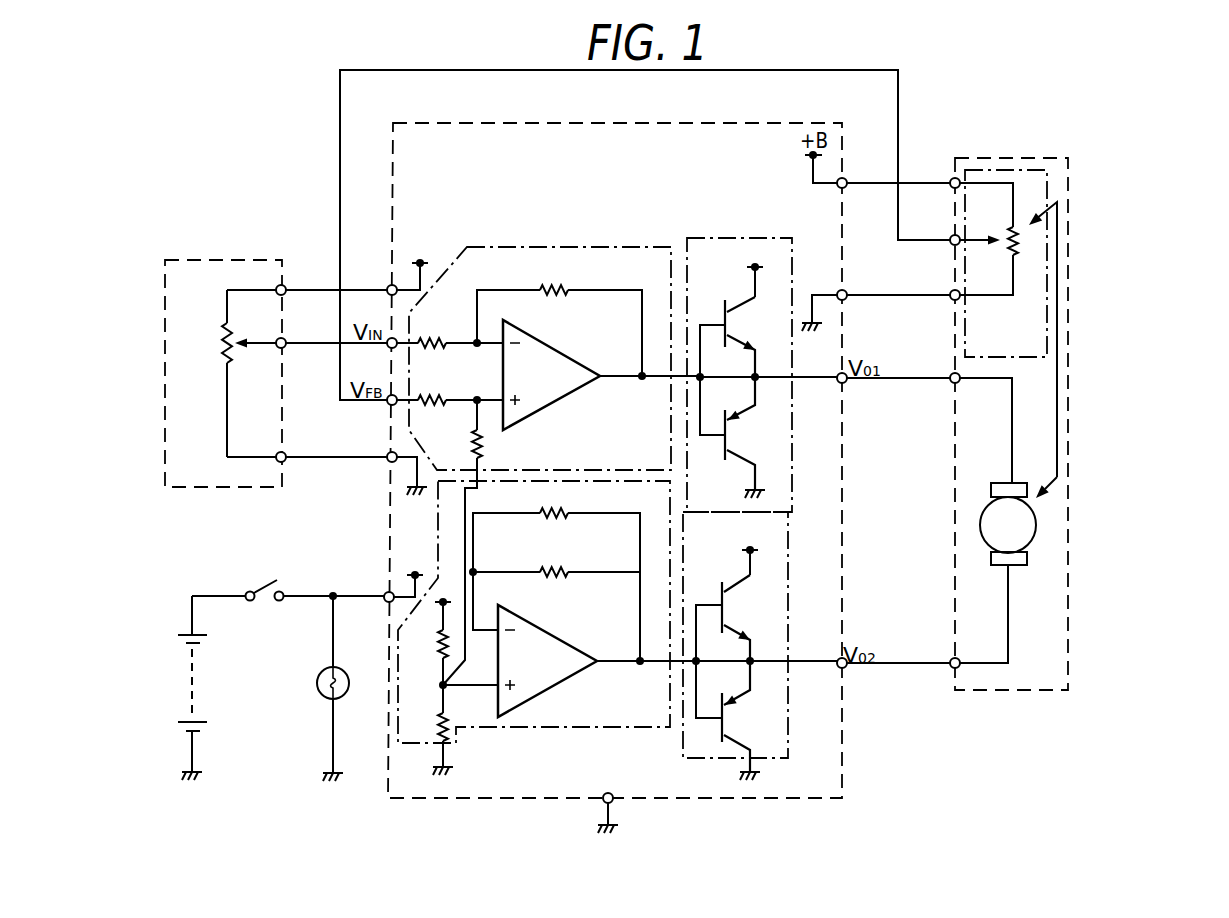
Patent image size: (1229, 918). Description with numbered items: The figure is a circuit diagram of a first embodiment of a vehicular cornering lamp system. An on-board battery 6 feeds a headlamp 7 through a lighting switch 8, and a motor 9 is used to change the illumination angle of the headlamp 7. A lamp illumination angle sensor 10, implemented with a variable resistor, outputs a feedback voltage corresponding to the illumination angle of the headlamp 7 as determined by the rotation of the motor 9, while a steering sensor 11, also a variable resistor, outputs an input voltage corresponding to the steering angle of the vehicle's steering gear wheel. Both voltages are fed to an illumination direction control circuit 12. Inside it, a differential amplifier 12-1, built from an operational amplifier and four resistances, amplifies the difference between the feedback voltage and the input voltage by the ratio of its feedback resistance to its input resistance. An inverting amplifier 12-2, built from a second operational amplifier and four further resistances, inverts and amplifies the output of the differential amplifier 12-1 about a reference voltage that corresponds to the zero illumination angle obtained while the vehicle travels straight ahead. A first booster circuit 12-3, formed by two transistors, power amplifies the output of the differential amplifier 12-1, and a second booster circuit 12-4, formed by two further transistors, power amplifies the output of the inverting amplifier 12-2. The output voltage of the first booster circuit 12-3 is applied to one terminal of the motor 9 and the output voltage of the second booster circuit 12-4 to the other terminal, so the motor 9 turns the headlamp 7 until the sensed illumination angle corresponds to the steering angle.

The on-board battery 6 is at (190, 672).
The headlamp 7 is at (320, 697).
The lighting switch 8 is at (264, 585).
The motor 9 is at (1037, 520).
The lamp illumination angle sensor 10 is at (990, 158).
The steering sensor 11 is at (165, 290).
The illumination direction control circuit 12 is at (733, 800).
The differential amplifier 12-1 is at (642, 230).
The inverting amplifier 12-2 is at (590, 727).
The first booster circuit 12-3 is at (695, 238).
The second booster circuit 12-4 is at (787, 745).